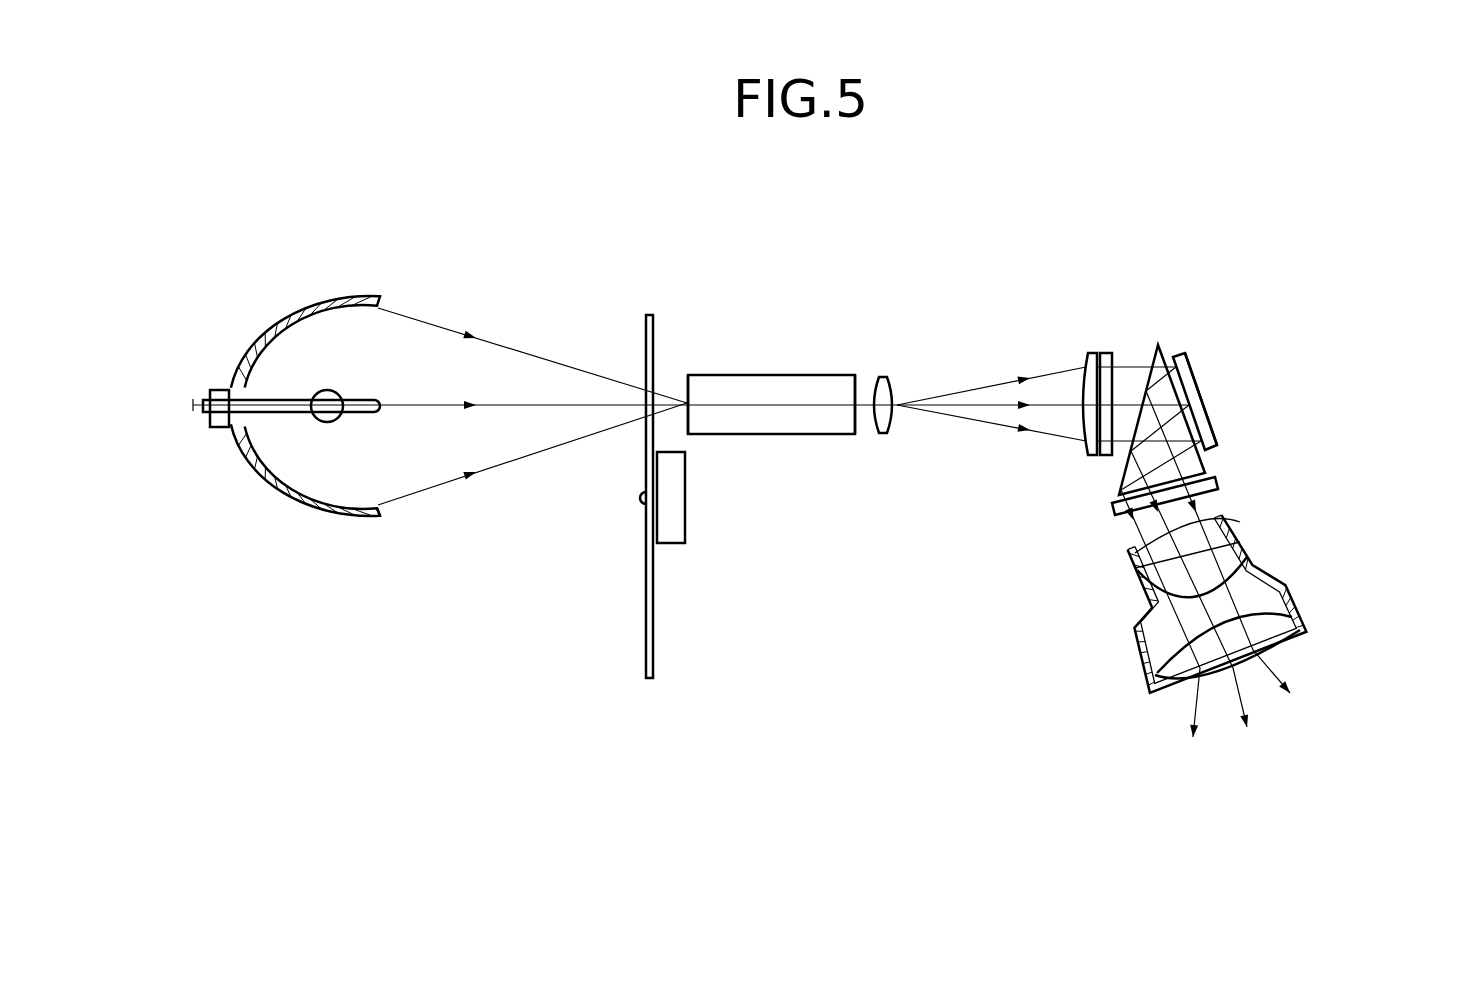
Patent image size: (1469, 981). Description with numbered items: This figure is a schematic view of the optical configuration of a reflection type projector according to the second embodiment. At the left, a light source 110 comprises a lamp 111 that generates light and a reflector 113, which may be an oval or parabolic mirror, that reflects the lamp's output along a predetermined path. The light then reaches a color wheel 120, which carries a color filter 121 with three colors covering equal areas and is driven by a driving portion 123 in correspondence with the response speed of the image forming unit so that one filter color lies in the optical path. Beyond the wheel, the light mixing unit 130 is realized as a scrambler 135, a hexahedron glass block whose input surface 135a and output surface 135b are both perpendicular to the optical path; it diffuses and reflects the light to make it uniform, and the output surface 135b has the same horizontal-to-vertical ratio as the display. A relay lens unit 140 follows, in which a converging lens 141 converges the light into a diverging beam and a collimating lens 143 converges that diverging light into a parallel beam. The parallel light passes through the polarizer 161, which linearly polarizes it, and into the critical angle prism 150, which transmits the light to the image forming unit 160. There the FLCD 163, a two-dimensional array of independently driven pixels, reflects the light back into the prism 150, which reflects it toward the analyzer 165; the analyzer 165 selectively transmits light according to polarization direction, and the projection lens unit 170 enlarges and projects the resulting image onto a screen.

The light source 110 is at (322, 300).
The lamp 111 is at (320, 421).
The reflector 113 is at (372, 520).
The color wheel 120 is at (639, 468).
The color filter 121 is at (646, 616).
The driving portion 123 is at (673, 544).
The light mixing unit 130 is at (811, 414).
The scrambler 135 is at (800, 435).
The input surface 135a is at (688, 436).
The output surface 135b is at (856, 437).
The relay lens unit 140 is at (982, 408).
The converging lens 141 is at (891, 426).
The collimating lens 143 is at (1085, 447).
The critical angle prism 150 is at (1157, 342).
The image forming unit 160 is at (1235, 385).
The polarizer 161 is at (1105, 457).
The FLCD 163 is at (1212, 437).
The analyzer 165 is at (1219, 484).
The projection lens unit 170 is at (1316, 603).